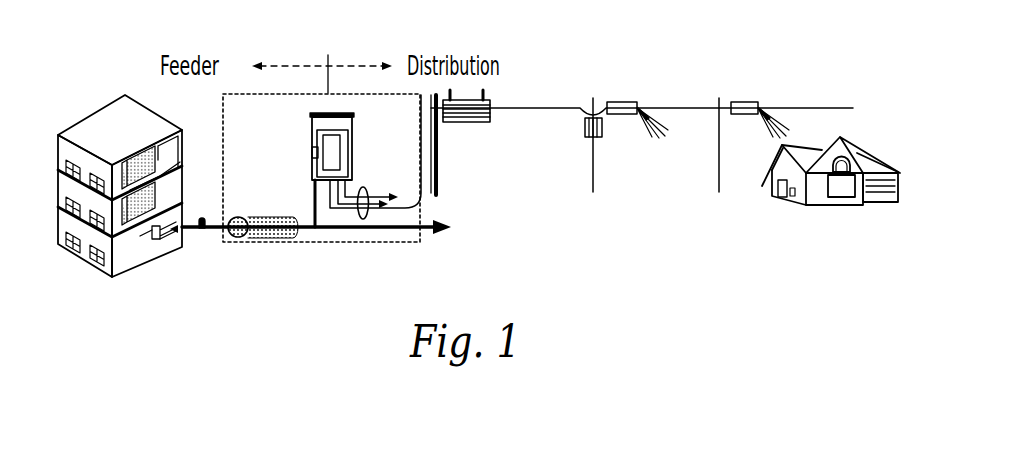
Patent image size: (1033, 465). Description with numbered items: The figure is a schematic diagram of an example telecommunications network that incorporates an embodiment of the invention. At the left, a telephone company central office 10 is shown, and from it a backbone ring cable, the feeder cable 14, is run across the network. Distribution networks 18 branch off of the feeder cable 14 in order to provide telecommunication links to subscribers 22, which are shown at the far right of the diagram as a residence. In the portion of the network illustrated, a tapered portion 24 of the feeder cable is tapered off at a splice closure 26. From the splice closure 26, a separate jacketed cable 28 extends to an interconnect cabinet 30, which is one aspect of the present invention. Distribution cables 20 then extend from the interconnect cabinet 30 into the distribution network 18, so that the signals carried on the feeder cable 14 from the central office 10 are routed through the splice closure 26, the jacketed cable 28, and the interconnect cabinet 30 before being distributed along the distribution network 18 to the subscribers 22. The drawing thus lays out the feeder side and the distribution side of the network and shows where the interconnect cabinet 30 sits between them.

The telephone company central office 10 is at (106, 106).
The feeder cable 14 is at (398, 243).
The distribution network 18 is at (693, 108).
The distribution cables 20 is at (363, 219).
The subscribers 22 is at (873, 165).
The tapered portion of the feeder cable 24 is at (314, 199).
The splice closure 26 is at (255, 214).
The jacketed cable 28 is at (314, 187).
The interconnect cabinet 30 is at (353, 136).